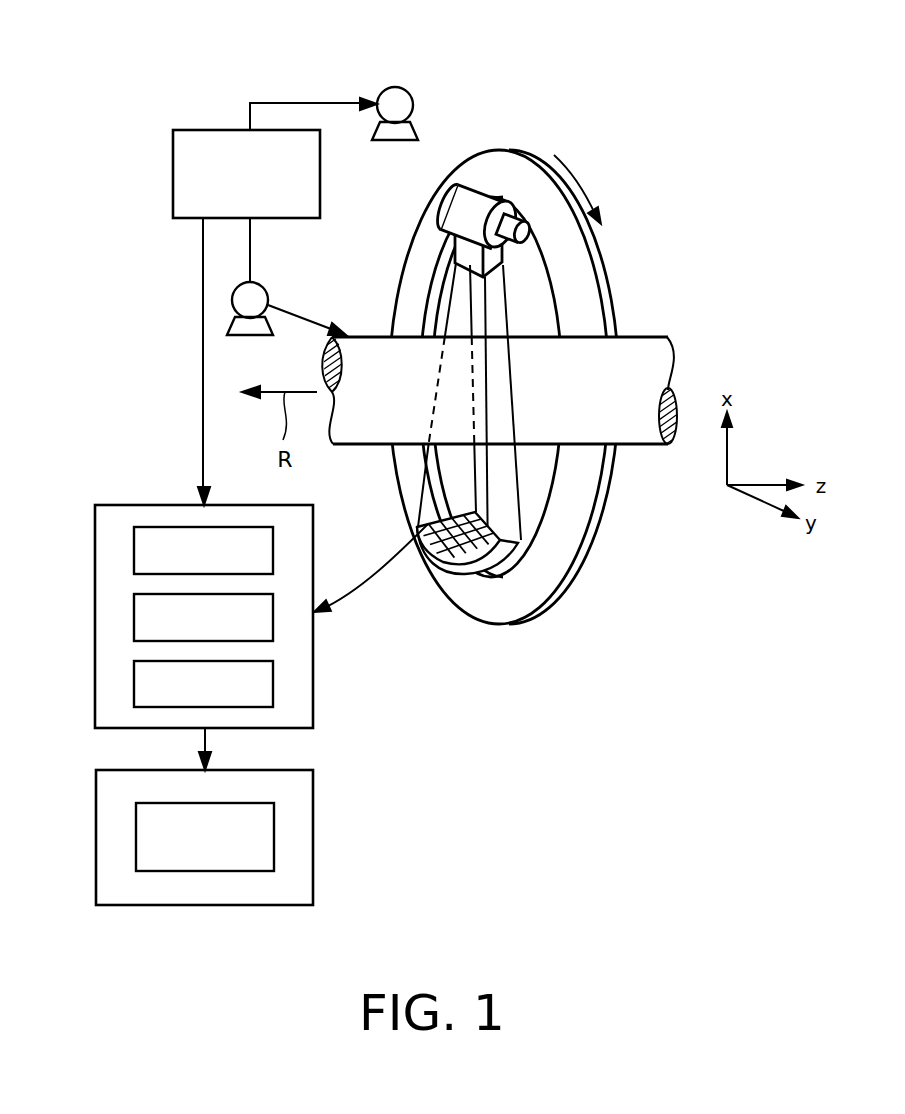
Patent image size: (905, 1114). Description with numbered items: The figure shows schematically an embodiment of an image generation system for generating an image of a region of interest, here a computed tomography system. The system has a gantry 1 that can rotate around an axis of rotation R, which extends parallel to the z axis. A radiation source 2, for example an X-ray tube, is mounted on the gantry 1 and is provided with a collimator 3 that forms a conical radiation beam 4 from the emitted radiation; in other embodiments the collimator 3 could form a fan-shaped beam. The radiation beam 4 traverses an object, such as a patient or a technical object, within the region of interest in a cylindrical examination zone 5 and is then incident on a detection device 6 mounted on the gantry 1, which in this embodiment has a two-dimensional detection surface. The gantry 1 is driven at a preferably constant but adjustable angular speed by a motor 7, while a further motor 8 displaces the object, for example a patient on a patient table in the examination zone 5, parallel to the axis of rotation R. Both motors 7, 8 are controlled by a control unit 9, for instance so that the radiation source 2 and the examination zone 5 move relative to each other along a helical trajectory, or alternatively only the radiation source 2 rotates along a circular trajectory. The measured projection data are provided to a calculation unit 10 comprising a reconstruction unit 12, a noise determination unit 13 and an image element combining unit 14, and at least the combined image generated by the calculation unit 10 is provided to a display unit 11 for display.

The gantry 1 is at (556, 565).
The radiation source 2 is at (472, 198).
The collimator 3 is at (500, 253).
The radiation beam 4 is at (490, 503).
The cylindrical examination zone 5 is at (370, 337).
The detection device 6 is at (458, 573).
The motor 7 is at (395, 87).
The further motor 8 is at (265, 290).
The control unit 9 is at (200, 130).
The calculation unit 10 is at (218, 637).
The display unit 11 is at (313, 836).
The reconstruction unit 12 is at (134, 547).
The noise determination unit 13 is at (134, 614).
The image element combining unit 14 is at (134, 676).